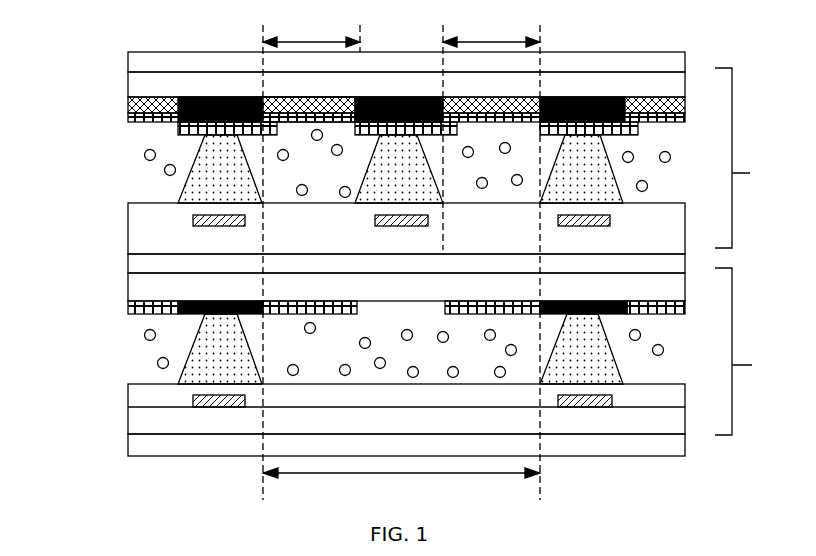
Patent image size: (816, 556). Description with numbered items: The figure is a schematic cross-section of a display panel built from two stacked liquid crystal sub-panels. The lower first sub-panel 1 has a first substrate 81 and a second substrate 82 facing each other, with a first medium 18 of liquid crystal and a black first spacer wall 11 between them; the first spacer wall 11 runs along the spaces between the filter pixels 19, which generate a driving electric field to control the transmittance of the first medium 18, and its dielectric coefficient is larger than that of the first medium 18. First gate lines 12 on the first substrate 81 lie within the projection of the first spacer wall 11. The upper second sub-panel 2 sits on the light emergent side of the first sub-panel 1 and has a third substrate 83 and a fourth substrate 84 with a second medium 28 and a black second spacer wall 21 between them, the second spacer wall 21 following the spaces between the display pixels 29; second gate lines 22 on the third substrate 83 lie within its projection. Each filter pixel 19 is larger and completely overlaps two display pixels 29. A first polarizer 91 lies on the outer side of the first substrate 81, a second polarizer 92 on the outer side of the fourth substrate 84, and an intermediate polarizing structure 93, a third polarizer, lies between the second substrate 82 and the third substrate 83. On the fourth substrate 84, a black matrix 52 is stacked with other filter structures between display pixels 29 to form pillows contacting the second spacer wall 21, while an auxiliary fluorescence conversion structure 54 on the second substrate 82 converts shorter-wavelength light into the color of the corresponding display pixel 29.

The first sub-panel 1 is at (742, 351).
The second sub-panel 2 is at (740, 158).
The first spacer wall 11 is at (238, 350).
The first gate line 12 is at (248, 406).
The first medium 18 is at (144, 338).
The filter pixel 19 is at (401, 484).
The second spacer wall 21 is at (232, 175).
The second gate line 22 is at (243, 224).
The second medium 28 is at (144, 156).
The display pixel 29 is at (401, 31).
The black matrix 52 is at (200, 301).
The auxiliary fluorescence conversion structure 54 is at (325, 303).
The first substrate 81 is at (128, 420).
The second substrate 82 is at (128, 292).
The third substrate 83 is at (128, 242).
The fourth substrate 84 is at (128, 88).
The first polarizer 91 is at (128, 450).
The second polarizer 92 is at (128, 60).
The intermediate polarizing structure 93 is at (128, 266).